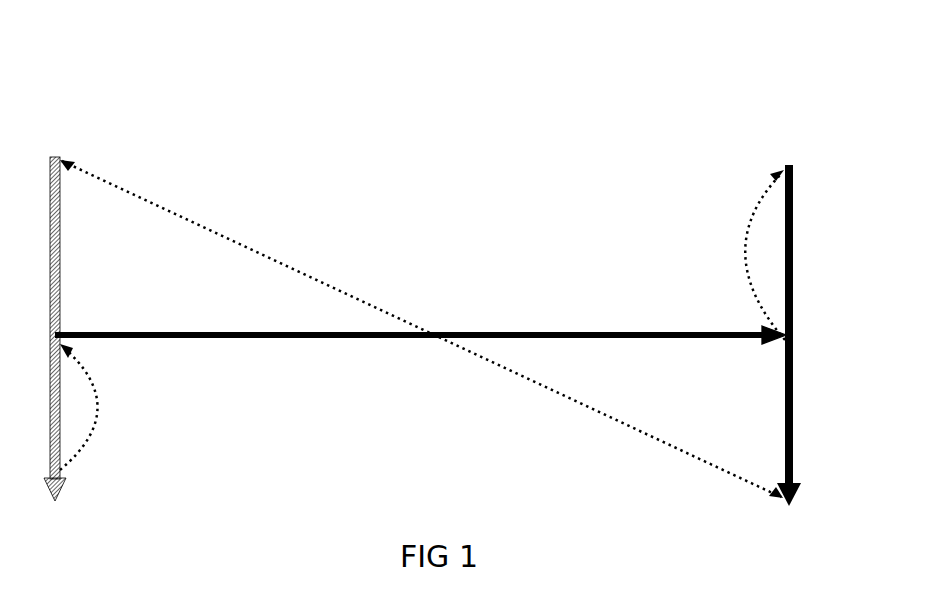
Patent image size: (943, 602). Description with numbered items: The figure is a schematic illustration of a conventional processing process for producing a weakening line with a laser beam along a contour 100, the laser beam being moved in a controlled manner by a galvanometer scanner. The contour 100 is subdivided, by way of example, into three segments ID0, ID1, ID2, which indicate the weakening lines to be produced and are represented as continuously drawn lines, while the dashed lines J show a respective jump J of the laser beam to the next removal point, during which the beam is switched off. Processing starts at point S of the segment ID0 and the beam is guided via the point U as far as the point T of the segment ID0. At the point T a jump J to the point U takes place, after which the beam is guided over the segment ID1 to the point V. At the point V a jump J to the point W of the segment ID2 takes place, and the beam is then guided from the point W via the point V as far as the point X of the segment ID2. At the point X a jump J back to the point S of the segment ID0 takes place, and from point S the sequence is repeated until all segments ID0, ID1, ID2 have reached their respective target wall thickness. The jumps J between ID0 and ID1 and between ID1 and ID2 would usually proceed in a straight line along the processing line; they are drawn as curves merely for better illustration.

The contour 100 is at (151, 124).
The segment ID0 is at (60, 245).
The segment ID1 is at (310, 341).
The segment ID2 is at (820, 413).
The jump J is at (422, 329).
The point S is at (33, 161).
The point T is at (33, 487).
The point U is at (35, 334).
The point V is at (817, 335).
The point W is at (821, 175).
The point X is at (817, 505).